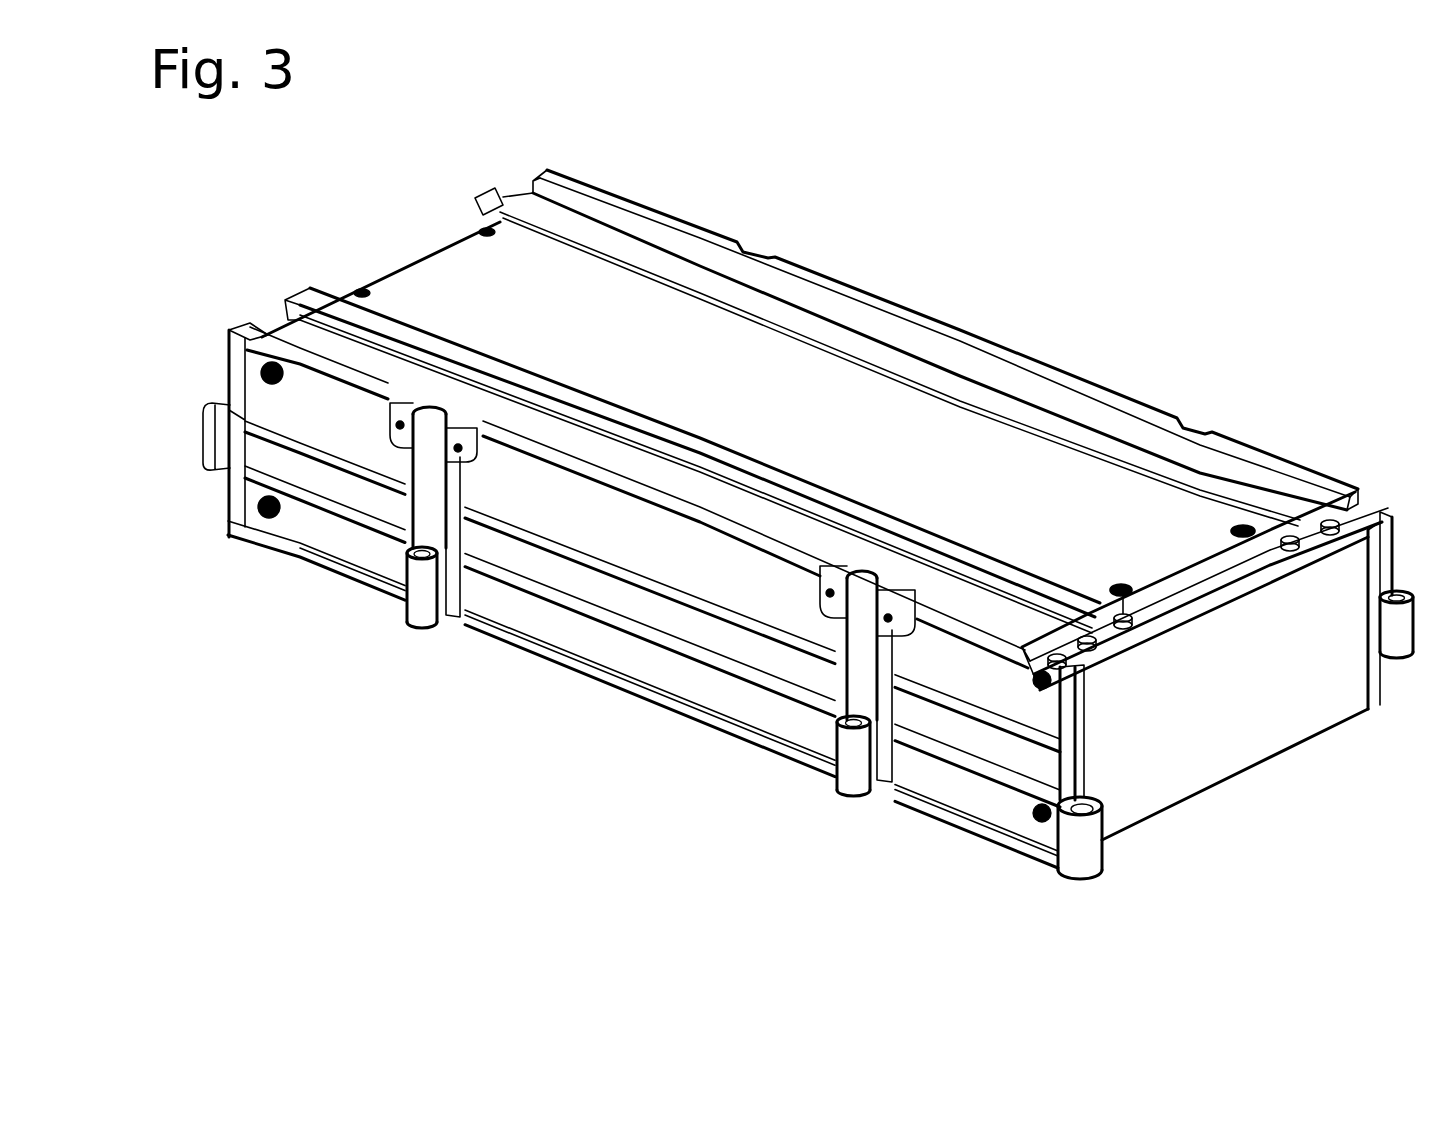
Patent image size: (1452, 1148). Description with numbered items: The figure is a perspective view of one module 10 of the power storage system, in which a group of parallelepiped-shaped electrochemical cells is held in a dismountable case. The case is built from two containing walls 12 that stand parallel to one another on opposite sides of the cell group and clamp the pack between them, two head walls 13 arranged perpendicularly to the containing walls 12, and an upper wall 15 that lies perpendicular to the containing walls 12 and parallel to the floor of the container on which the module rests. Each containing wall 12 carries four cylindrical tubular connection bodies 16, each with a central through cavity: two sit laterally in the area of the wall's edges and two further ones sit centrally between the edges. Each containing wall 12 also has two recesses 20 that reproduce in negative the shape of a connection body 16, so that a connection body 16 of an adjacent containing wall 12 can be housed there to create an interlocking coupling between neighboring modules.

The module 10 is at (580, 860).
The containing wall 12 is at (627, 597).
The head wall 13 is at (1257, 668).
The upper wall 15 is at (890, 410).
The connection body 16 is at (215, 452).
The recess 20 is at (752, 248).